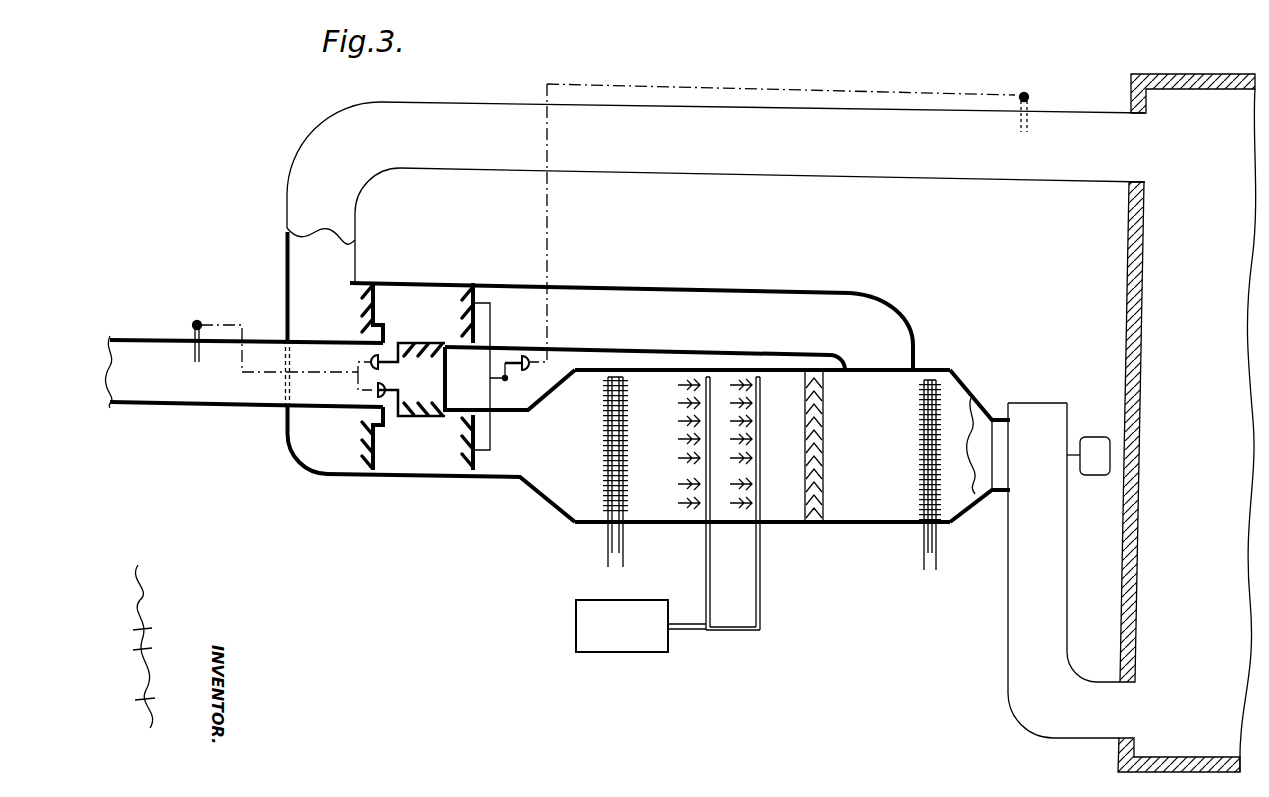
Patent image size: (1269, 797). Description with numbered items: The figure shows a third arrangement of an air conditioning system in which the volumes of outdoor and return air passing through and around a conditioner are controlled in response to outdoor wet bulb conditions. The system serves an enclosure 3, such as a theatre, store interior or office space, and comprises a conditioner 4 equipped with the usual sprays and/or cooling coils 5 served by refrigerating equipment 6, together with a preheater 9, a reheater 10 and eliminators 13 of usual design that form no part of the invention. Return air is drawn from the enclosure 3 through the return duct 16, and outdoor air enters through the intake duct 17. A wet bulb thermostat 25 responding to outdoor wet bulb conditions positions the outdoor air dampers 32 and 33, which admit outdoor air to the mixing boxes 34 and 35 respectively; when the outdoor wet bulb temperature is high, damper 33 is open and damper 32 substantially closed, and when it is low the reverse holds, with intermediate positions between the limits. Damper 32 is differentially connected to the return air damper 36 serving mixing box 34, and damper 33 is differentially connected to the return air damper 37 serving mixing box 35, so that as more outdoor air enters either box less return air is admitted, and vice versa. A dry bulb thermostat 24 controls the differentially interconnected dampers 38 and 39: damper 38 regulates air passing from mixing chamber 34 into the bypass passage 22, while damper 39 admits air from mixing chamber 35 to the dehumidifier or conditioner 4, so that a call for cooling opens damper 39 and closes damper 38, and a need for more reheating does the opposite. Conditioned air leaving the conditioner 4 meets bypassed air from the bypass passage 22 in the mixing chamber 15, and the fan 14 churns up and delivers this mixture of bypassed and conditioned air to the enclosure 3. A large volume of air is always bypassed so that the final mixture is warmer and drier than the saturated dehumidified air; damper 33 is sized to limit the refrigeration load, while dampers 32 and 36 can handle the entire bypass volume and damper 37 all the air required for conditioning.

The enclosure 3 is at (1172, 301).
The conditioner 4 is at (786, 520).
The sprays and/or cooling coils 5 is at (692, 446).
The refrigerating equipment 6 is at (637, 606).
The preheater 9 is at (627, 441).
The reheater 10 is at (921, 471).
The eliminators 13 is at (824, 463).
The fan 14 is at (1044, 410).
The mixing chamber 15 is at (958, 402).
The return duct 16 is at (698, 165).
The intake duct 17 is at (160, 393).
The bypass passage 22 is at (682, 300).
The dry bulb thermostat 24 is at (1030, 105).
The wet bulb thermostat 25 is at (200, 321).
The outdoor air damper 32 is at (417, 352).
The outdoor air damper 33 is at (415, 400).
The mixing box 34 is at (405, 298).
The mixing box 35 is at (413, 470).
The return air damper 36 is at (362, 302).
The return air damper 37 is at (361, 438).
The bypass damper 38 is at (463, 298).
The conditioner damper 39 is at (460, 451).